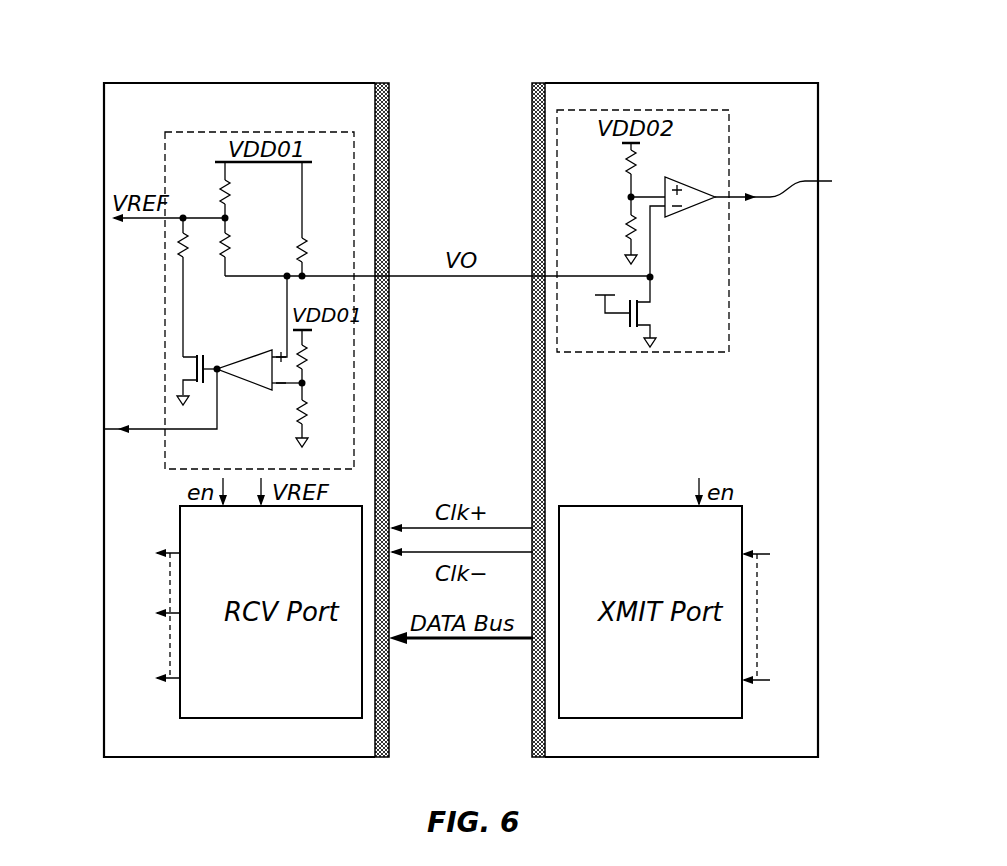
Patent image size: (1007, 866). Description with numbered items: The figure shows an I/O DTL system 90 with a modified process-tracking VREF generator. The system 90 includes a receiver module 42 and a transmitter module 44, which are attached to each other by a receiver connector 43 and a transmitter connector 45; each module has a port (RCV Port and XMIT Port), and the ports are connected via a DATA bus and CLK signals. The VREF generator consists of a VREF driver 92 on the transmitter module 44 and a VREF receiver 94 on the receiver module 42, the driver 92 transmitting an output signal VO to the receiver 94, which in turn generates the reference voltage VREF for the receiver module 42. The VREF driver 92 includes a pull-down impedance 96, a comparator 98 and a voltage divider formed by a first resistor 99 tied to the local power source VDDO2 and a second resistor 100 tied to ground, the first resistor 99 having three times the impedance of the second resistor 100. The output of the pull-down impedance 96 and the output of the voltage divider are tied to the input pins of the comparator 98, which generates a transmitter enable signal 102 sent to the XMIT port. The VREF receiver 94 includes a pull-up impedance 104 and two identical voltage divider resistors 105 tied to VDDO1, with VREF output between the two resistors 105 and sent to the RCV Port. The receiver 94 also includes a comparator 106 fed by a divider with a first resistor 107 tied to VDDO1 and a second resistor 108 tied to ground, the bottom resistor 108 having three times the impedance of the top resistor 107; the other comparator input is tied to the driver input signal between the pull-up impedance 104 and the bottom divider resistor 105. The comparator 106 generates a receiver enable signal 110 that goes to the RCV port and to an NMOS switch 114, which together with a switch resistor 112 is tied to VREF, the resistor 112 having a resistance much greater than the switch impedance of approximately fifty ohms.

The I/O DTL system 90 is at (718, 62).
The receiver module 42 is at (117, 721).
The receiver connector 43 is at (389, 126).
The transmitter module 44 is at (805, 722).
The transmitter connector 45 is at (532, 126).
The VREF driver 92 is at (716, 139).
The VREF receiver 94 is at (176, 146).
The pull-down impedance 96 is at (648, 313).
The comparator 98 is at (692, 194).
The first divider resistor 99 is at (633, 170).
The second divider resistor 100 is at (633, 228).
The transmitter enable signal 102 is at (795, 200).
The pull-up impedance 104 is at (300, 246).
The voltage divider resistors 105 is at (222, 183).
The comparator 106 is at (240, 363).
The first resistor 107 is at (300, 349).
The second resistor 108 is at (300, 416).
The receiver enable signal 110 is at (110, 430).
The switch resistor 112 is at (178, 252).
The NMOS switch 114 is at (190, 373).